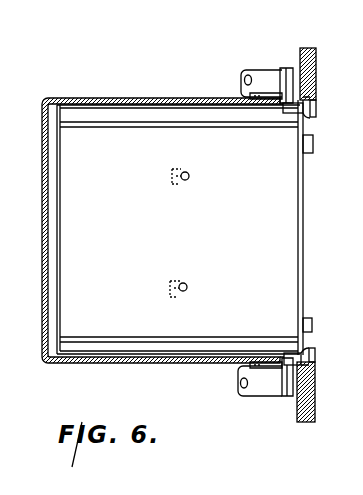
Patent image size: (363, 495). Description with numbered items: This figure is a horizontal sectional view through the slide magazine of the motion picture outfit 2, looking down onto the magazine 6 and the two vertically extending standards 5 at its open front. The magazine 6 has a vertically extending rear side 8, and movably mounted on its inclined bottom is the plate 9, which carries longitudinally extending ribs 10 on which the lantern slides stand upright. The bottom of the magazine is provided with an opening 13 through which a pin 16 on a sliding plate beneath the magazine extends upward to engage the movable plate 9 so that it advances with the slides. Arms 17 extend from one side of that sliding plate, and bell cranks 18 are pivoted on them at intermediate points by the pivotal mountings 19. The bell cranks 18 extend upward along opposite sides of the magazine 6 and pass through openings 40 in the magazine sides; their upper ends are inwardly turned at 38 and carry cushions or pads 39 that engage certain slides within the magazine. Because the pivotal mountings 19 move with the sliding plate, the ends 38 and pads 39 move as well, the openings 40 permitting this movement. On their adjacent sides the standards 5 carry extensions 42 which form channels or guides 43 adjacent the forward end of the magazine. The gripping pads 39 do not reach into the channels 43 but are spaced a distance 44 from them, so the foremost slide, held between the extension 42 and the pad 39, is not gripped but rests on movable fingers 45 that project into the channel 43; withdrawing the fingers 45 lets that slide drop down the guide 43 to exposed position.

The support frame 2 is at (359, 203).
The standards 5 is at (317, 80).
The magazine 6 is at (110, 99).
The rear side 8 is at (48, 222).
The plate 9 is at (136, 254).
The ribs 10 is at (133, 128).
The opening 13 is at (173, 241).
The pin 16 is at (190, 175).
The arms 17 is at (250, 97).
The bell cranks 18 is at (251, 69).
The pivotal mounting 19 is at (244, 79).
The inwardly turned ends 38 is at (289, 68).
The cushions or pads 39 is at (293, 114).
The openings 40 is at (280, 106).
The extensions 42 is at (317, 118).
The channels or guides 43 is at (312, 97).
The distance 44 is at (305, 114).
The movable fingers 45 is at (312, 154).